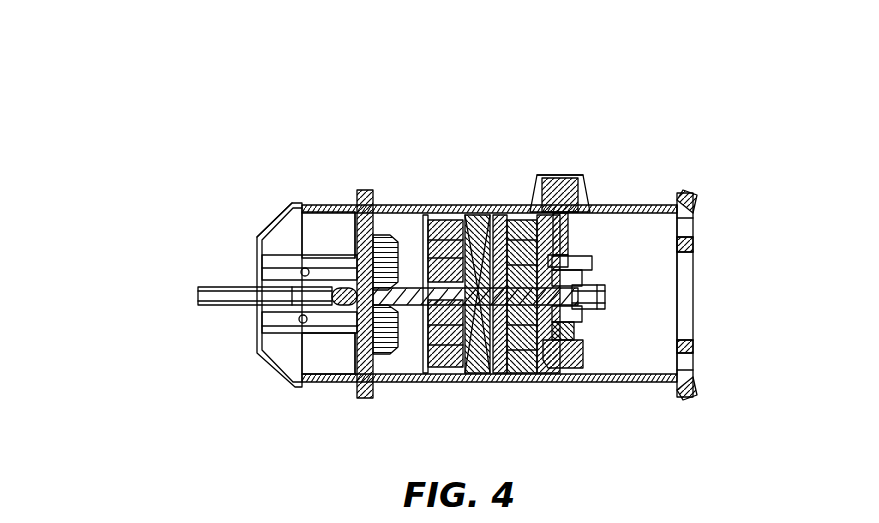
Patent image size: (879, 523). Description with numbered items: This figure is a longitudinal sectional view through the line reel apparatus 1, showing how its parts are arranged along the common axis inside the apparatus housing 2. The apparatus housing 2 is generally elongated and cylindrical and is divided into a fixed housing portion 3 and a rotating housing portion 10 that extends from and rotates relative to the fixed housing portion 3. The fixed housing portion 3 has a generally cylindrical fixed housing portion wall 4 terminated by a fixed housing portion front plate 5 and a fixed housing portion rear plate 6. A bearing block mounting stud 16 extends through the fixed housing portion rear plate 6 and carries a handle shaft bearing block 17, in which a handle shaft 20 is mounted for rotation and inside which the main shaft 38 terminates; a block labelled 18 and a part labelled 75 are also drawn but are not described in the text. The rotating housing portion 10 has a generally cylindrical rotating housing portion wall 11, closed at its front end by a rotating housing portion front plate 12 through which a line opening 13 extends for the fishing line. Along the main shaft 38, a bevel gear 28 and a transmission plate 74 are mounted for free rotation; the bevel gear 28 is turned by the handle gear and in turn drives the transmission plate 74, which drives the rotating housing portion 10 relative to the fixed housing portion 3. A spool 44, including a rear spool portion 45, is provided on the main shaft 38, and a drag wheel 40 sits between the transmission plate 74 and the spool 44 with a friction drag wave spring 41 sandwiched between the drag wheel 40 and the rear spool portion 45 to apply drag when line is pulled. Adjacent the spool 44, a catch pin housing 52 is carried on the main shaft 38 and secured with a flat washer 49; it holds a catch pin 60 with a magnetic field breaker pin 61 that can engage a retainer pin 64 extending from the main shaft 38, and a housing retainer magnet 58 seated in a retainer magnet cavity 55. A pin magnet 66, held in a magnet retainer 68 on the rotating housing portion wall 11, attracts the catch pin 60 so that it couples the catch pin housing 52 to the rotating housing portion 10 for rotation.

The line reel apparatus 1 is at (268, 92).
The apparatus housing 2 is at (246, 252).
The fixed housing portion 3 is at (483, 255).
The fixed housing portion wall 4 is at (342, 220).
The fixed housing portion front plate 5 is at (364, 191).
The fixed housing portion rear plate 6 is at (256, 235).
The rotating housing portion 10 is at (645, 200).
The rotating housing portion wall 11 is at (620, 206).
The rotating housing portion front plate 12 is at (690, 204).
The line opening 13 is at (690, 262).
The bearing block mounting stud 16 is at (232, 303).
The handle shaft bearing block 17 is at (283, 262).
The block 18 is at (336, 226).
The handle shaft 20 is at (346, 306).
The bevel gear 28 is at (413, 258).
The main shaft 38 is at (369, 384).
The drag wheel 40 is at (476, 379).
The friction drag wave spring 41 is at (489, 213).
The spool 44 is at (511, 385).
The rear spool portion 45 is at (500, 382).
The flat washer 49 is at (603, 306).
The catch pin housing 52 is at (623, 382).
The retainer magnet cavity 55 is at (590, 338).
The housing retainer magnet 58 is at (570, 383).
The catch pin 60 is at (578, 237).
The magnetic field breaker pin 61 is at (600, 261).
The retainer pin 64 is at (597, 276).
The pin magnet 66 is at (558, 176).
The magnet retainer 68 is at (604, 213).
The transmission plate 74 is at (458, 222).
The lower gear 75 is at (420, 376).